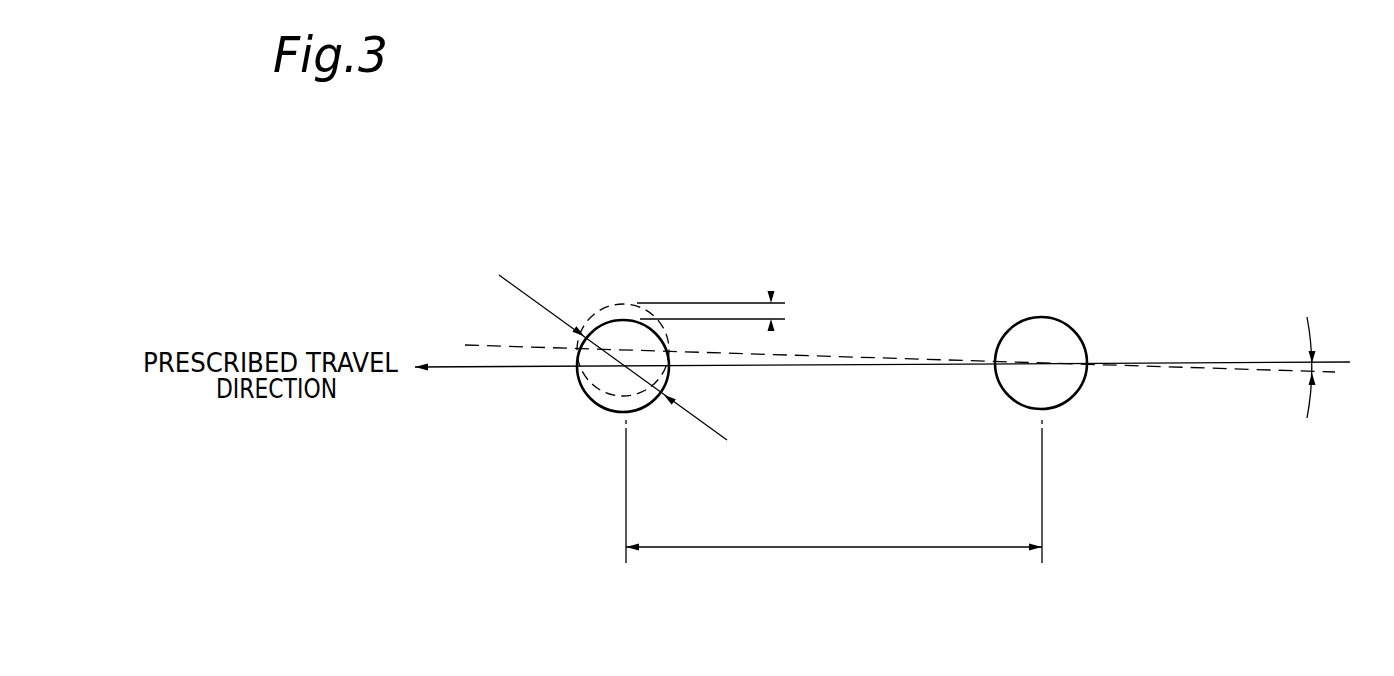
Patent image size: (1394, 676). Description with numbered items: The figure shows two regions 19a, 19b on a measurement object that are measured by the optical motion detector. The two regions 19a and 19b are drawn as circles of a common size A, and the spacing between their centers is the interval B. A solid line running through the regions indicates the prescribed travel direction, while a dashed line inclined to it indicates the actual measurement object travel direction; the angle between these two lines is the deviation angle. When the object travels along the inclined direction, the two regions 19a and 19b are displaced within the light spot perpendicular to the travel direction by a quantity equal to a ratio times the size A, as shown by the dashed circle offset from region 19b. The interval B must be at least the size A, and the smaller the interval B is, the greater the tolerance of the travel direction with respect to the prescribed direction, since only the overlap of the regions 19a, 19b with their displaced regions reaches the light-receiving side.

The region 19a is at (1058, 340).
The region 19b is at (598, 401).
The size of the two regions A is at (499, 275).
The interval between the centers of the two regions B is at (834, 503).